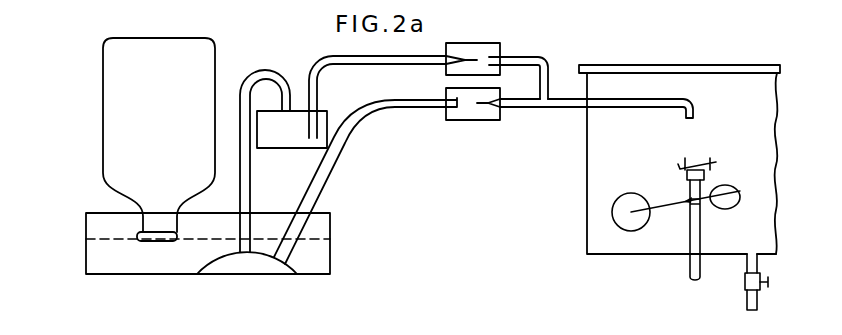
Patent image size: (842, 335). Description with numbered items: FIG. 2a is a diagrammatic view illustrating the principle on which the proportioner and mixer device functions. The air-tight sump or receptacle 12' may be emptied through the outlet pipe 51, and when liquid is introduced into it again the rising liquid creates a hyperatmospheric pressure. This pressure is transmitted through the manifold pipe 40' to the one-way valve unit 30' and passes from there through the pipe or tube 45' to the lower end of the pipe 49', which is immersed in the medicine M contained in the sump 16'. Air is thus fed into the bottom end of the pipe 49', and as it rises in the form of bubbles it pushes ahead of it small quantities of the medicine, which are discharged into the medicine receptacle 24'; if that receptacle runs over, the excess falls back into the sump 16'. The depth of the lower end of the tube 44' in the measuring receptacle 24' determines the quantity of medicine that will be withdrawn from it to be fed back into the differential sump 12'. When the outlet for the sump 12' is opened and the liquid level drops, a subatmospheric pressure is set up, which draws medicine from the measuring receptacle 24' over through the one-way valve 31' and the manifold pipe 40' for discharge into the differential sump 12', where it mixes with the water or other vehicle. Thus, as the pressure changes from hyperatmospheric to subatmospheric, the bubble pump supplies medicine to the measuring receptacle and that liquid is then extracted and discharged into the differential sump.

The medicine M is at (150, 258).
The sump 16' is at (241, 243).
The pipe 49' is at (247, 189).
The medicine receptacle 24' is at (292, 149).
The tube 44' is at (380, 87).
The one-way valve 31' is at (497, 61).
The pipe or tube 45' is at (365, 181).
The one-way valve unit 30' is at (473, 124).
The manifold pipe 40' is at (596, 76).
The sump or receptacle 12' is at (661, 172).
The outlet pipe 51 is at (757, 304).